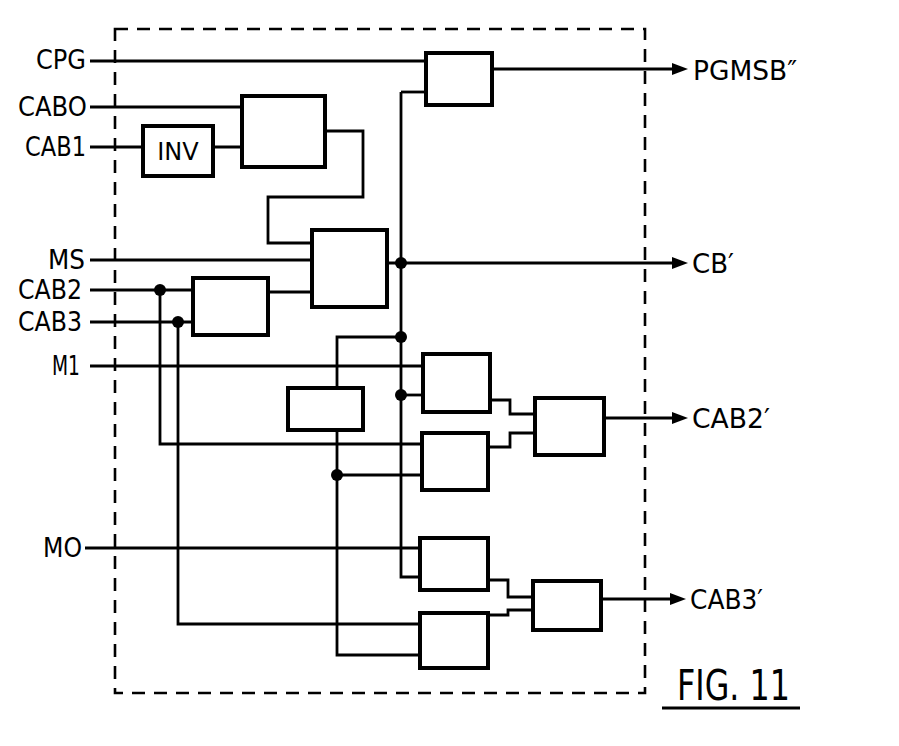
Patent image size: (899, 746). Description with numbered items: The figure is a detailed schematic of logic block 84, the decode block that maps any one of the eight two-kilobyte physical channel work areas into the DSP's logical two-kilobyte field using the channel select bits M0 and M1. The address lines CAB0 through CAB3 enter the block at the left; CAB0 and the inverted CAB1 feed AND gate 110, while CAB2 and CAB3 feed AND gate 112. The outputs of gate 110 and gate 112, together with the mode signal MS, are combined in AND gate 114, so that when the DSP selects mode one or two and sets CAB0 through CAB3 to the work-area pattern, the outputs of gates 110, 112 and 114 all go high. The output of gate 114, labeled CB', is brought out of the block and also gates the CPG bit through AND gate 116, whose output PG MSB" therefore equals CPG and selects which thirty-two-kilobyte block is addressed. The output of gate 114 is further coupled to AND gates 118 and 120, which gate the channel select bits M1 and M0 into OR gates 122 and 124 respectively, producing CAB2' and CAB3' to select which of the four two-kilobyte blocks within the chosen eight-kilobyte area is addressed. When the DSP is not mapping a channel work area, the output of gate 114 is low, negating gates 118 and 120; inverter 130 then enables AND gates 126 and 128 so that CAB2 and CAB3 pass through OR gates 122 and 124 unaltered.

The logic block 84 is at (645, 163).
The AND gate 110 is at (325, 97).
The AND gate 112 is at (268, 313).
The AND gate 114 is at (378, 229).
The AND gate 116 is at (492, 100).
The AND gate 118 is at (470, 354).
The AND gate 120 is at (488, 552).
The OR gate 122 is at (584, 455).
The OR gate 124 is at (552, 630).
The AND gate 126 is at (486, 491).
The AND gate 128 is at (488, 652).
The inverter 130 is at (288, 410).